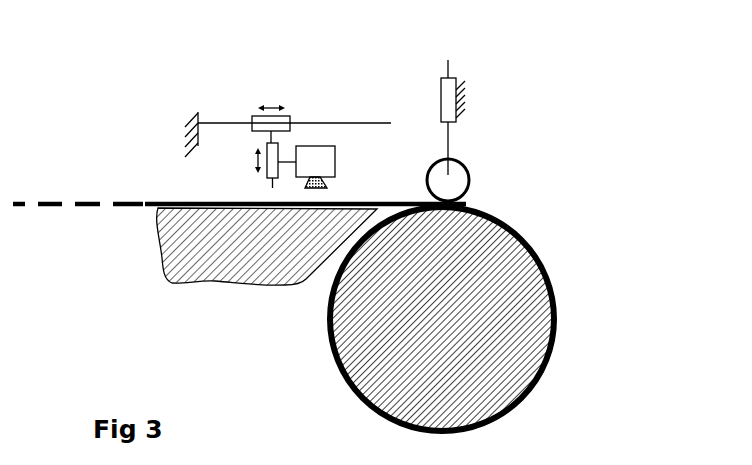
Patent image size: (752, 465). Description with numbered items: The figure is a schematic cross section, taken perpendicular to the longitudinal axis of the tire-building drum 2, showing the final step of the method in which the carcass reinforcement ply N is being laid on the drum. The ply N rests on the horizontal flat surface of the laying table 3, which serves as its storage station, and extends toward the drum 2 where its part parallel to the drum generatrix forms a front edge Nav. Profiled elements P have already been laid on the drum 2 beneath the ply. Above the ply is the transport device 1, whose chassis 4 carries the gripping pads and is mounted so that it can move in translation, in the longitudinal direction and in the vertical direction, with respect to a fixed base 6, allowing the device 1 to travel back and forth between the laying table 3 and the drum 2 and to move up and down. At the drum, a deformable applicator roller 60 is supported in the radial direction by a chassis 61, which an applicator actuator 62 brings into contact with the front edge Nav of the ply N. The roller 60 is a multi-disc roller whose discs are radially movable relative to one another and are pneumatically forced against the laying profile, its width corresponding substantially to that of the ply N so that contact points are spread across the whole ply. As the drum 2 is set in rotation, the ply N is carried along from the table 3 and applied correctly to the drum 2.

The transport device 1 is at (326, 103).
The tire-building drum 2 is at (350, 371).
The laying table 3 is at (182, 279).
The chassis 4 is at (330, 147).
The fixed base 6 is at (186, 124).
The deformable applicator roller 60 is at (461, 162).
The chassis 61 is at (449, 138).
The applicator actuator 62 is at (447, 90).
The carcass reinforcement ply N is at (148, 204).
The front edge Nav is at (464, 203).
The profiled elements P is at (555, 297).